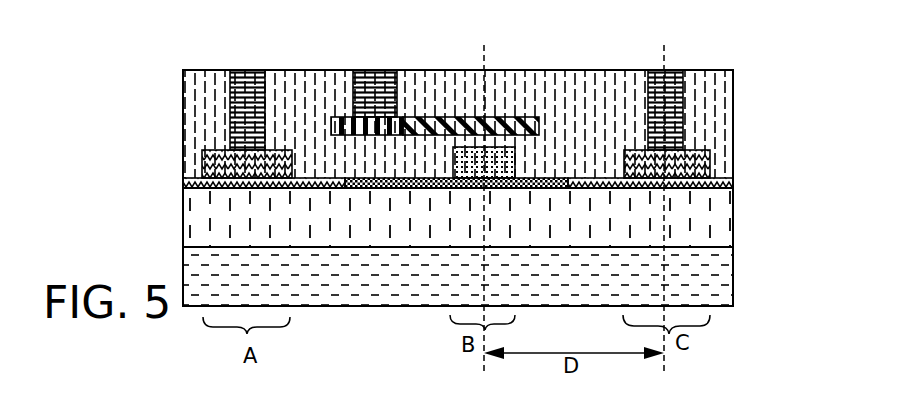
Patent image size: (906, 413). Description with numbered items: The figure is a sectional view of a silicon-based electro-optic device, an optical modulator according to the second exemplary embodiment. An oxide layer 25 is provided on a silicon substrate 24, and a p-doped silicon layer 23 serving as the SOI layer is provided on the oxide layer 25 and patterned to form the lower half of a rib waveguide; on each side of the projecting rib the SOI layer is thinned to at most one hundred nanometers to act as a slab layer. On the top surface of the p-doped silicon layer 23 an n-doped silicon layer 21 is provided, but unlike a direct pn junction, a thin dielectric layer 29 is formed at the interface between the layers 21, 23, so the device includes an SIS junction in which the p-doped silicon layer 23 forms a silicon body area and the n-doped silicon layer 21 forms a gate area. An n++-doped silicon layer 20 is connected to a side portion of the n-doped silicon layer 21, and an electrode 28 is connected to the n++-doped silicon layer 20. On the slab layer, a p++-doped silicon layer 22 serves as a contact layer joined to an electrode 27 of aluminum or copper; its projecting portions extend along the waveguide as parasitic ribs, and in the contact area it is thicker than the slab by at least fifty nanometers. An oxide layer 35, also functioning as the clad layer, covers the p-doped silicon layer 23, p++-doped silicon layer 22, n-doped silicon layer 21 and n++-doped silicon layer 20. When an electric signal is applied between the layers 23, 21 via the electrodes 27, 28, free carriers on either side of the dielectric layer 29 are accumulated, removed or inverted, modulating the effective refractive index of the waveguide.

The n++-doped silicon layer 20 is at (347, 117).
The n-doped silicon layer 21 is at (497, 127).
The p++-doped silicon layer 22 is at (205, 164).
The p-doped silicon layer 23 is at (540, 178).
The silicon substrate 24 is at (713, 272).
The oxide layer 25 is at (713, 217).
The electrode 27 is at (245, 70).
The electrode 28 is at (378, 70).
The thin dielectric layer 29 is at (470, 147).
The oxide layer 35 is at (550, 140).